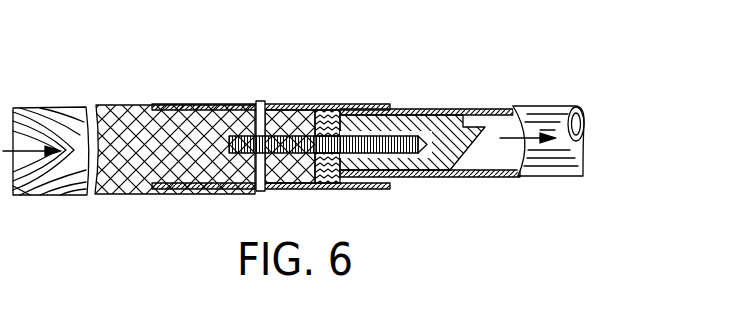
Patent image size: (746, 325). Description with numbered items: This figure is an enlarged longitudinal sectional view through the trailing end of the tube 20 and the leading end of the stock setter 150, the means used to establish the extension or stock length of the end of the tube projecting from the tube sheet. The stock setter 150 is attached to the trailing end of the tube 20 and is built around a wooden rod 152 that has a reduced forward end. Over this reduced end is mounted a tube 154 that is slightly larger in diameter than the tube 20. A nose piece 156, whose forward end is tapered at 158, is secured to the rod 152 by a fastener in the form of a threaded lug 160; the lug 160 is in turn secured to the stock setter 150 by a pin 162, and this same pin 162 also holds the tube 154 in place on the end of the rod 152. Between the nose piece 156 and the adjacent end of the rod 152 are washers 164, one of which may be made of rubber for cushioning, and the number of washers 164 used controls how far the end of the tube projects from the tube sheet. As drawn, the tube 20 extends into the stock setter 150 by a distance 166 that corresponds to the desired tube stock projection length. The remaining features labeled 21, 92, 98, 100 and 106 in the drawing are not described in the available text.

The tube 20 is at (527, 108).
The tube 21 is at (402, 109).
The fitting 92 is at (8, 70).
The conduit 98 is at (8, 35).
The wooden member 100 is at (0, 213).
The passage 106 is at (18, 283).
The stock setter 150 is at (241, 82).
The wooden rod 152 is at (123, 110).
The tube 154 is at (318, 103).
The nose piece 156 is at (430, 175).
The tapered forward end 158 is at (490, 177).
The threaded lug 160 is at (399, 155).
The pin 162 is at (259, 103).
The washers 164 is at (322, 188).
The distance 166 is at (390, 97).